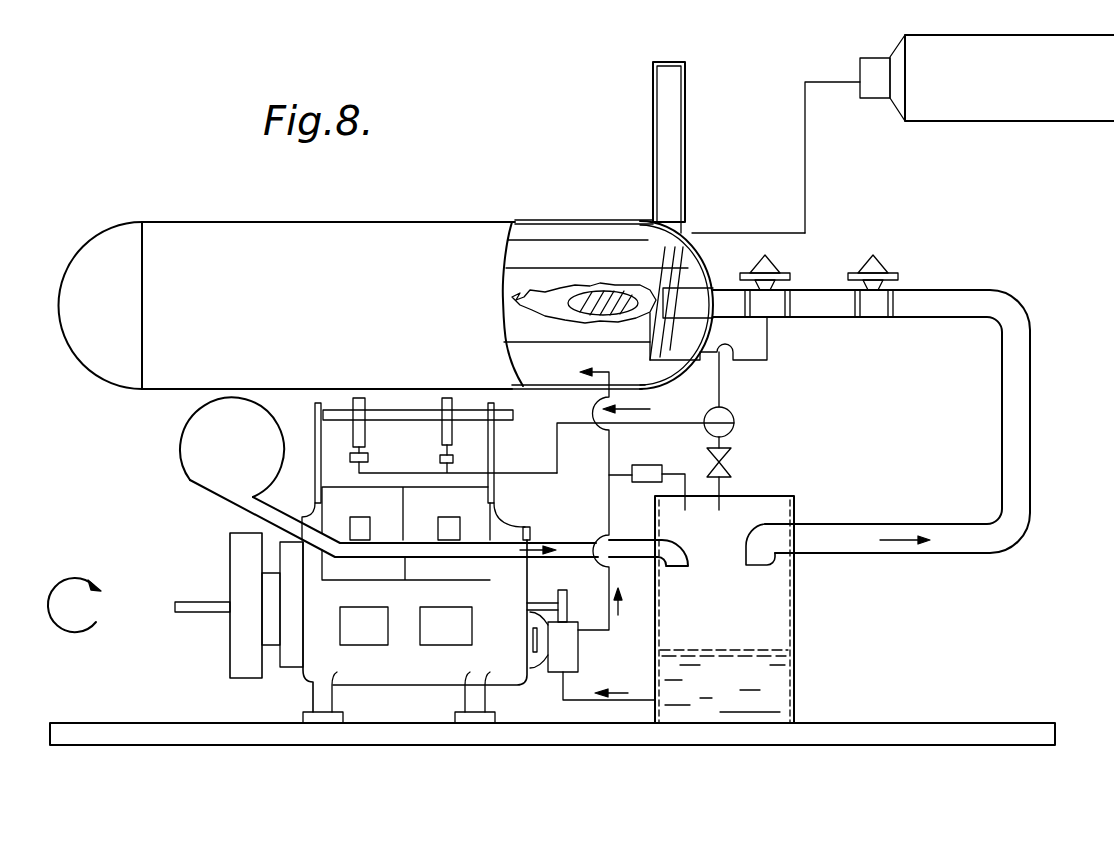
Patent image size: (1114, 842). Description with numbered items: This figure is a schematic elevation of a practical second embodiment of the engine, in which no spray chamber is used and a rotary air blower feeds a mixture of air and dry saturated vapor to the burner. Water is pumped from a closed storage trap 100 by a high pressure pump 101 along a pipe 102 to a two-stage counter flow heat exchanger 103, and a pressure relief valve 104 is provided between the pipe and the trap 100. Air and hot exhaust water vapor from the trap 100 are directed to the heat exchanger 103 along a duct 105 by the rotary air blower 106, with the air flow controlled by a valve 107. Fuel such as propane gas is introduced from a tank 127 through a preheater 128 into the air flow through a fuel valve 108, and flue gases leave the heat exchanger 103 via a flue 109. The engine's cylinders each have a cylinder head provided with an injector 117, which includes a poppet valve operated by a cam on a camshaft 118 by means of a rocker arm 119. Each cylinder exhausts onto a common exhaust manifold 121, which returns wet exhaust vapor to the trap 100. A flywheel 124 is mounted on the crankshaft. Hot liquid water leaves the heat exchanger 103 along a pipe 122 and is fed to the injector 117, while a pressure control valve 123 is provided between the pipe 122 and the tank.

The closed storage trap 100 is at (793, 688).
The high pressure pump 101 is at (578, 663).
The pipe 102 is at (608, 520).
The two-stage counter flow heat exchanger 103 is at (350, 222).
The pressure relief valve 104 is at (647, 465).
The duct 105 is at (1008, 298).
The rotary air blower 106 is at (183, 443).
The valve 107 is at (880, 272).
The fuel valve 108 is at (773, 272).
The flue 109 is at (688, 124).
The injector 117 is at (370, 458).
The camshaft 118 is at (332, 410).
The rocker arm 119 is at (367, 442).
The common exhaust manifold 121 is at (373, 557).
The pipe 122 is at (725, 395).
The pressure control valve 123 is at (730, 464).
The flywheel 124 is at (240, 672).
The tank 127 is at (1043, 118).
The preheater 128 is at (697, 262).